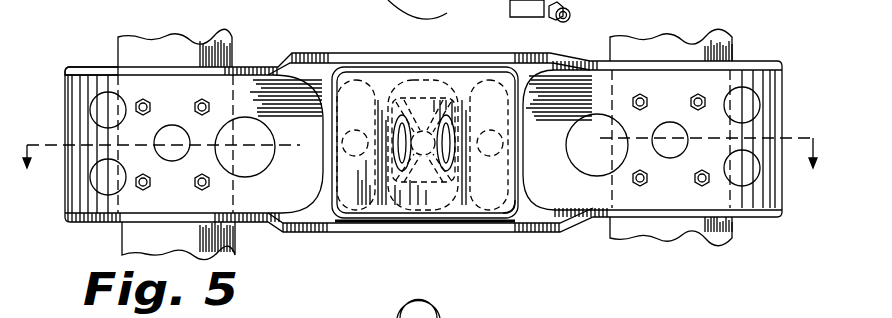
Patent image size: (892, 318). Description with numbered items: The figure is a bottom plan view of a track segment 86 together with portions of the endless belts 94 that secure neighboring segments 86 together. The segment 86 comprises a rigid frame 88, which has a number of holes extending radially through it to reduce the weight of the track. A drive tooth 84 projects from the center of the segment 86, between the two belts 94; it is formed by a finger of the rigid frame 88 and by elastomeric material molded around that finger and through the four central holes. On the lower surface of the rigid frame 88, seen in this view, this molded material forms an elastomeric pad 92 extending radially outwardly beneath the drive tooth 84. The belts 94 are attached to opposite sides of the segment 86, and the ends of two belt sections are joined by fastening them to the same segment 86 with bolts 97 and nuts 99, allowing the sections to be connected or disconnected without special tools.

The drive tooth 84 is at (420, 185).
The track segment 86 is at (310, 236).
The rigid frame 88 is at (80, 120).
The elastomeric pad 92 is at (512, 205).
The endless belt 94 is at (200, 53).
The bolt 97 is at (142, 190).
The nut 99 is at (207, 100).